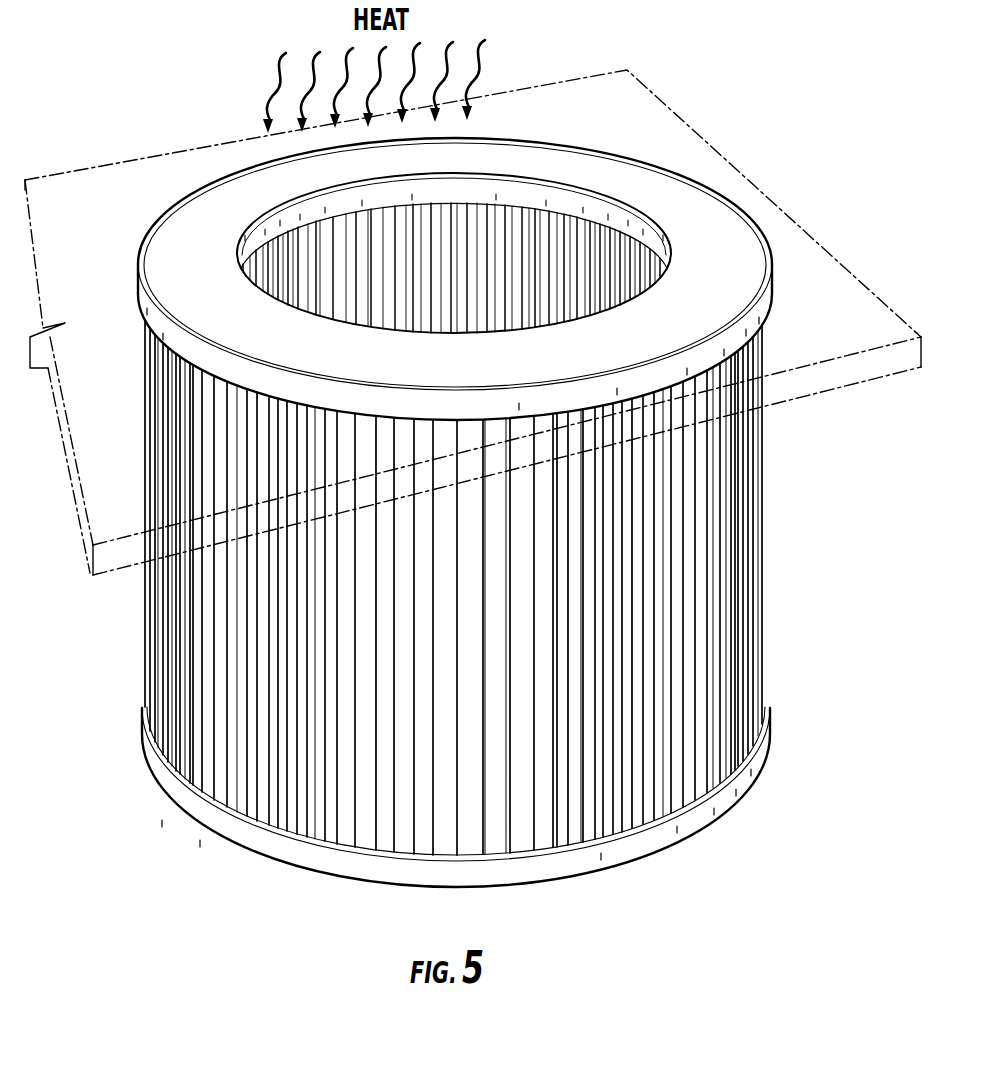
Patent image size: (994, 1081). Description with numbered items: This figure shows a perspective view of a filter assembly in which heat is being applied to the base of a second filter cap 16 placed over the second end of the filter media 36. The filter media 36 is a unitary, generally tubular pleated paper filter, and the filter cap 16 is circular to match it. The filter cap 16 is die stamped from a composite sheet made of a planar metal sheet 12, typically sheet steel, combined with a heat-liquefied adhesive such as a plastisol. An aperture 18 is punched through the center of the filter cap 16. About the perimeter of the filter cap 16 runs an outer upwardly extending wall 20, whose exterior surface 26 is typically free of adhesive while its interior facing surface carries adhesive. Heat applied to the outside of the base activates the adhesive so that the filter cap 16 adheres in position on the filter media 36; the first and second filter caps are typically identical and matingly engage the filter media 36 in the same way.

The planar metal sheet 12 is at (226, 207).
The filter cap 16 is at (703, 225).
The aperture 18 is at (516, 222).
The outer upwardly extending wall 20 is at (545, 890).
The exterior surface 26 is at (726, 803).
The filter media 36 is at (781, 323).